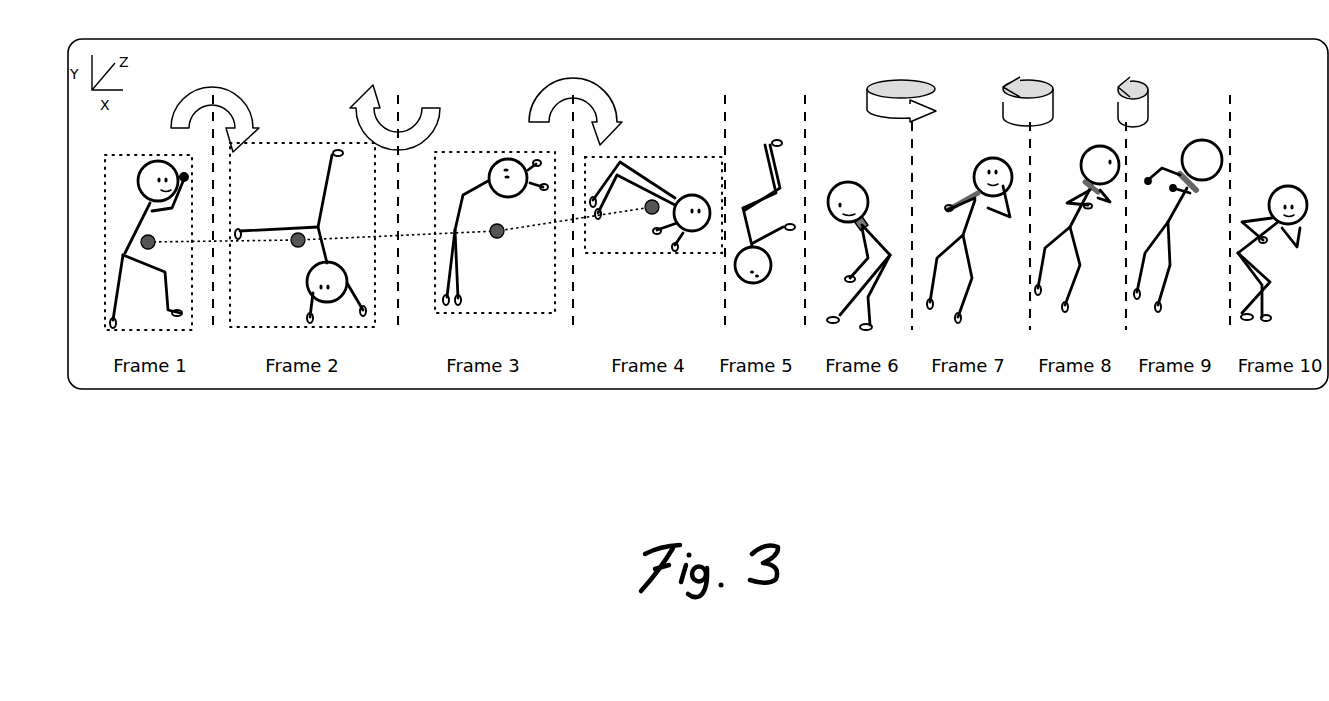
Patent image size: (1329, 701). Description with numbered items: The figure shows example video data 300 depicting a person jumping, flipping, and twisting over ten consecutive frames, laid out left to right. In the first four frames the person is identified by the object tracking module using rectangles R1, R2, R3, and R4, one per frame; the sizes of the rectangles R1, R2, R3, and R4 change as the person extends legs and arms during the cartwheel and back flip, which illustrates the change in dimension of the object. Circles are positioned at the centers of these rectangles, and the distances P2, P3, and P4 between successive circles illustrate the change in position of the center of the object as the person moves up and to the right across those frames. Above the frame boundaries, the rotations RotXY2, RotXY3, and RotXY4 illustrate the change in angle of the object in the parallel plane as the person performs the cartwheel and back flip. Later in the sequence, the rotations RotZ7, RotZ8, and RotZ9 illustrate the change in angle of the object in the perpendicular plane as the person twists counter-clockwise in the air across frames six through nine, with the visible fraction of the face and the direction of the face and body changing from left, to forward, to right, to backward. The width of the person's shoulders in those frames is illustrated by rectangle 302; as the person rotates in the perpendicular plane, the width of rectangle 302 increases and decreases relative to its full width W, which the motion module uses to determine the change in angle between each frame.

The video data 300 is at (768, 66).
The rectangle 302 is at (858, 233).
The distance P2 is at (274, 250).
The distance P3 is at (442, 233).
The distance P4 is at (632, 210).
The rectangle R1 is at (127, 328).
The rectangle R2 is at (265, 330).
The rectangle R3 is at (455, 308).
The rectangle R4 is at (635, 253).
The rotation RotXY2 is at (238, 97).
The rotation RotXY3 is at (443, 108).
The rotation RotXY4 is at (607, 103).
The rotation RotZ7 is at (905, 80).
The rotation RotZ8 is at (1025, 80).
The rotation RotZ9 is at (1138, 78).